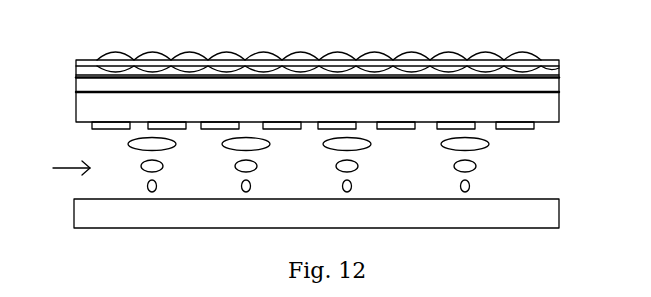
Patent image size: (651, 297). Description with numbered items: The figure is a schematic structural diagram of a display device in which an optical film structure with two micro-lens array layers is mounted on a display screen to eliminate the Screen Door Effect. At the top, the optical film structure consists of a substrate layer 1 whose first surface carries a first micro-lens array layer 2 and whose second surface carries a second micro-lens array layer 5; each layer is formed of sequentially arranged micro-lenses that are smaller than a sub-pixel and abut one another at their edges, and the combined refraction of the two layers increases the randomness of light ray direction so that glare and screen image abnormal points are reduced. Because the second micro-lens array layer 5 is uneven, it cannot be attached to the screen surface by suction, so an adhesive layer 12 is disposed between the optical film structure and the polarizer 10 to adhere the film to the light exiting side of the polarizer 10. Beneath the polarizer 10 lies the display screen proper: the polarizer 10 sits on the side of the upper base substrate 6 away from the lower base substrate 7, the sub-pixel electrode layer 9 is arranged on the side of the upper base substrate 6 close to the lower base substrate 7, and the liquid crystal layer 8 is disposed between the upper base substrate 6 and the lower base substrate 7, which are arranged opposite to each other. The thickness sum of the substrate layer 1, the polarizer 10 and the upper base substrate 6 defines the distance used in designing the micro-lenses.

The substrate layer 1 is at (559, 60).
The first micro-lens array layer 2 is at (522, 55).
The adhesive layer 12 is at (77, 70).
The second micro-lens array layer 5 is at (110, 67).
The polarizer 10 is at (553, 88).
The upper base substrate 6 is at (552, 110).
The sub-pixel electrode layer 9 is at (530, 123).
The liquid crystal layer 8 is at (63, 168).
The lower base substrate 7 is at (548, 217).